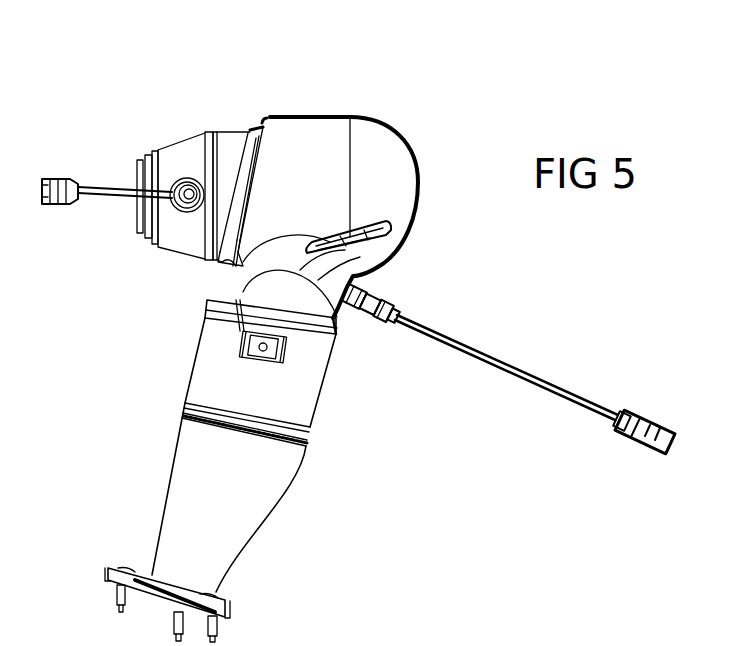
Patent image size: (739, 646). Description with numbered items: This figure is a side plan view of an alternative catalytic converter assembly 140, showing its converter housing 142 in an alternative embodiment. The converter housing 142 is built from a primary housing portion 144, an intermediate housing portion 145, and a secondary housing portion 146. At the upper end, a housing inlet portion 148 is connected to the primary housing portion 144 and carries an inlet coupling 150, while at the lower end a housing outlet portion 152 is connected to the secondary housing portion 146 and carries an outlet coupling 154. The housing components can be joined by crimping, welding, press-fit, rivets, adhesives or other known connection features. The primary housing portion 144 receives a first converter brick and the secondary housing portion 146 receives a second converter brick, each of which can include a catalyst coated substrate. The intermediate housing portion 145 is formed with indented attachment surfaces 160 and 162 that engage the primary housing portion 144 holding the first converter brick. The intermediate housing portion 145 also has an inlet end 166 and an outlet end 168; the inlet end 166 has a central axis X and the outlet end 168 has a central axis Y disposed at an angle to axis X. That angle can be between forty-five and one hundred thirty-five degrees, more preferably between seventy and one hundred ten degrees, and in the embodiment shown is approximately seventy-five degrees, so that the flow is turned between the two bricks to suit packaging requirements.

The catalytic converter assembly 140 is at (443, 127).
The converter housing 142 is at (381, 118).
The primary housing portion 144 is at (229, 132).
The intermediate housing portion 145 is at (419, 176).
The secondary housing portion 146 is at (323, 390).
The housing inlet portion 148 is at (185, 142).
The inlet coupling 150 is at (145, 156).
The housing outlet portion 152 is at (276, 468).
The outlet coupling 154 is at (229, 602).
The indented attachment surface 160 is at (258, 127).
The indented attachment surface 162 is at (386, 264).
The inlet end 166 is at (199, 262).
The outlet end 168 is at (334, 314).